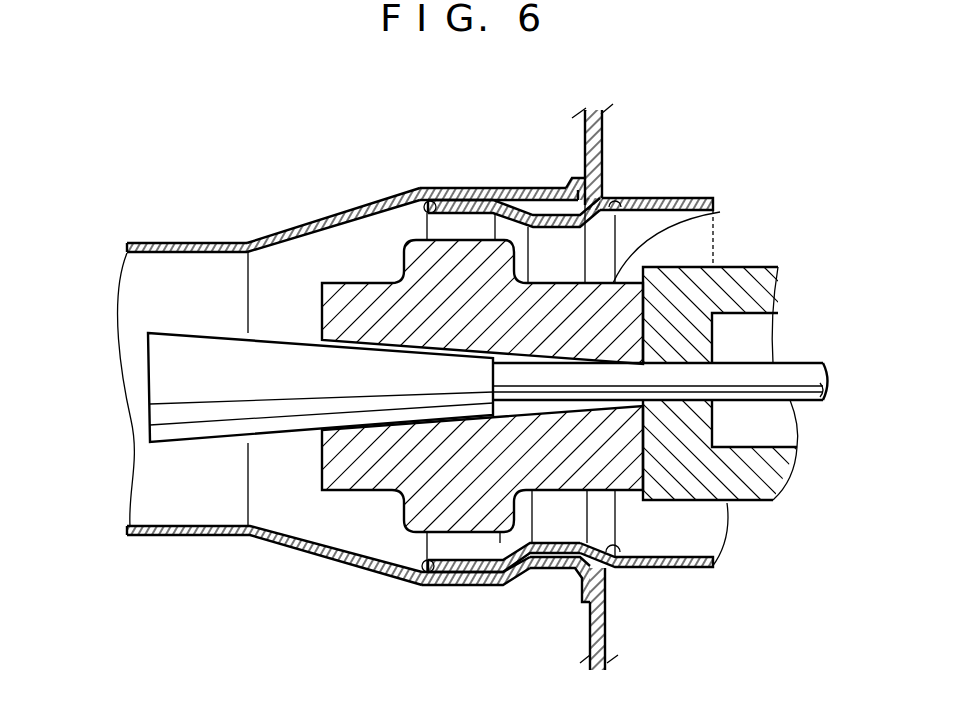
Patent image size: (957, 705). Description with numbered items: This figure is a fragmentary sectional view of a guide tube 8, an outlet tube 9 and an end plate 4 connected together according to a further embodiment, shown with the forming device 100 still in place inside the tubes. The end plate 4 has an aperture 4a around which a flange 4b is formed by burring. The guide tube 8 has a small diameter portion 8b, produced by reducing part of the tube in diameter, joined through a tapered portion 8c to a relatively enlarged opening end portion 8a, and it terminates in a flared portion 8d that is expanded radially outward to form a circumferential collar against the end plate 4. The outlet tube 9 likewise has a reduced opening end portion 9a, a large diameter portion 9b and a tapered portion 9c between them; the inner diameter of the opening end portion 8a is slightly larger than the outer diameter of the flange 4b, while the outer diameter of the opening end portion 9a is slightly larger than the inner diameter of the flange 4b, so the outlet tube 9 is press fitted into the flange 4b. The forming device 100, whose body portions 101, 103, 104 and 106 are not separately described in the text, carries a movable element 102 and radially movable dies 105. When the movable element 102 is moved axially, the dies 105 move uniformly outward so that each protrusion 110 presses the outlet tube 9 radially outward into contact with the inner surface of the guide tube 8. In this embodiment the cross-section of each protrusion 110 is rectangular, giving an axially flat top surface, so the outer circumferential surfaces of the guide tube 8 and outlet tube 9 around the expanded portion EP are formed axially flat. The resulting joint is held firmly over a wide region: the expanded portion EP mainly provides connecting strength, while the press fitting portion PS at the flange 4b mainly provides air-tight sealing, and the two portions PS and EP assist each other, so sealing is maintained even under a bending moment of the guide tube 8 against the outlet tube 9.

The end plate 4 is at (593, 128).
The aperture 4a is at (600, 197).
The flange 4b is at (533, 205).
The guide tube 8 is at (308, 220).
The opening end portion 8a is at (557, 190).
The small diameter portion 8b is at (198, 242).
The tapered portion 8c is at (277, 233).
The flared portion 8d is at (580, 180).
The outlet tube 9 is at (663, 578).
The opening end portion 9a is at (417, 577).
The large diameter portion 9b is at (708, 569).
The tapered portion 9c is at (620, 570).
The forming device 100 is at (760, 508).
The insulator block 101 is at (735, 282).
The movable element 102 is at (177, 391).
The insulating sheath 103 is at (187, 442).
The cable 104 is at (802, 362).
The dies 105 is at (718, 211).
The lower body 106 is at (323, 437).
The protrusion 110 is at (413, 240).
The expanded portion EP is at (468, 600).
The press fitting portion PS is at (550, 600).